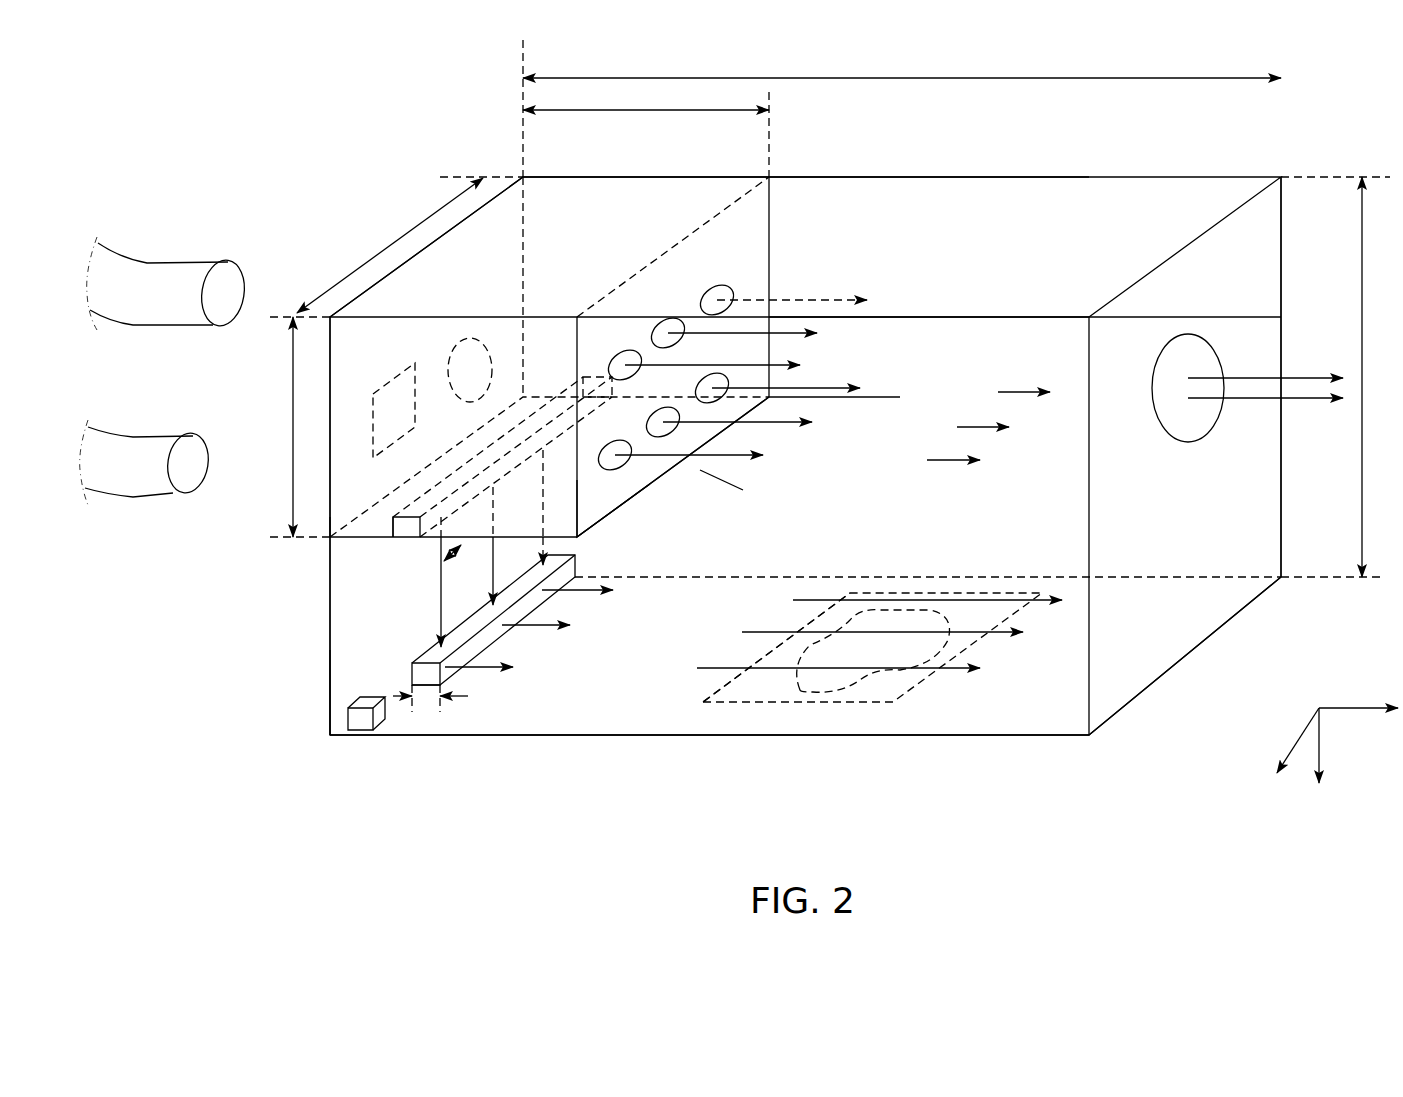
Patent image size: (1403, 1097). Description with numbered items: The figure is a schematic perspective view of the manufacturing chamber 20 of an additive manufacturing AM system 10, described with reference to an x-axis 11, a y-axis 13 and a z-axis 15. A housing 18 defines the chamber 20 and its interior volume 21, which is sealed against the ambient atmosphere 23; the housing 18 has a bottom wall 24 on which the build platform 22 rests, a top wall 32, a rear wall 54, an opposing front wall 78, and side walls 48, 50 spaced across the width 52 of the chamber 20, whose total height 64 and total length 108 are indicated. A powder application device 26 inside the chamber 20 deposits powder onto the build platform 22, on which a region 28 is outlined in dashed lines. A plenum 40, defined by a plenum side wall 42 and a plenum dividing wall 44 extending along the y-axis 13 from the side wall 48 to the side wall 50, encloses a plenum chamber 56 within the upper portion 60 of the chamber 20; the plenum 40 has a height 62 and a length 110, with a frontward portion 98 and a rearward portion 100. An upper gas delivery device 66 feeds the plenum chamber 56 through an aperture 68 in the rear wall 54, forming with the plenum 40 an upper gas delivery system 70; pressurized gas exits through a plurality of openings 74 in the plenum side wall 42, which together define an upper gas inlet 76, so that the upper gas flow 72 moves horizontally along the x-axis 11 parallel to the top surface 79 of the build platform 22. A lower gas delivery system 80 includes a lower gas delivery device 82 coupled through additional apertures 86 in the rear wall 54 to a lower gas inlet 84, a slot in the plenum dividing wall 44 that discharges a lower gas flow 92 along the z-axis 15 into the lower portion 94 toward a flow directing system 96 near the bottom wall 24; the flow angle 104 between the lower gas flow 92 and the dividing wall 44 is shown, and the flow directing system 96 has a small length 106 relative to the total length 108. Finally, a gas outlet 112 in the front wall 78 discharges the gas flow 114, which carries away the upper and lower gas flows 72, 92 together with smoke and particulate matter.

The AM system 10 is at (1082, 58).
The x-axis 11 is at (1365, 705).
The y-axis 13 is at (1300, 733).
The z-axis 15 is at (1322, 752).
The housing 18 is at (1145, 177).
The manufacturing chamber 20 is at (923, 350).
The interior volume 21 is at (911, 531).
The build platform 22 is at (868, 705).
The ambient atmosphere 23 is at (1216, 674).
The bottom wall 24 is at (993, 735).
The powder application device 26 is at (360, 730).
The heat generating region 28 is at (800, 690).
The top wall 32 is at (868, 177).
The plenum 40 is at (654, 200).
The plenum side wall 42 is at (620, 492).
The plenum dividing wall 44 is at (330, 537).
The side wall 48 is at (330, 688).
The side wall 50 is at (573, 177).
The width 52 is at (400, 240).
The rear wall 54 is at (338, 653).
The plenum chamber 56 is at (553, 272).
The upper portion 60 is at (330, 270).
The height 62 is at (284, 414).
The total height 64 is at (1362, 365).
The upper gas delivery device 66 is at (157, 243).
The aperture 68 is at (470, 339).
The upper gas delivery system 70 is at (310, 125).
The upper gas flow 72 is at (778, 335).
The openings 74 is at (633, 355).
The upper gas inlet 76 is at (743, 490).
The front wall 78 is at (1285, 290).
The top surface 79 is at (762, 680).
The lower gas delivery system 80 is at (172, 628).
The lower gas delivery device 82 is at (134, 425).
The lower gas inlet 84 is at (403, 541).
The additional apertures 86 is at (393, 378).
The lower gas flow 92 is at (437, 605).
The lower portion 94 is at (452, 778).
The flow directing system 96 is at (477, 673).
The frontward portion 98 is at (601, 528).
The rearward portion 100 is at (327, 519).
The flow angle 104 is at (465, 575).
The length 106 is at (426, 712).
The total length 108 is at (900, 78).
The length 110 is at (640, 110).
The gas outlet 112 is at (1210, 335).
The gas flow 114 is at (1308, 395).